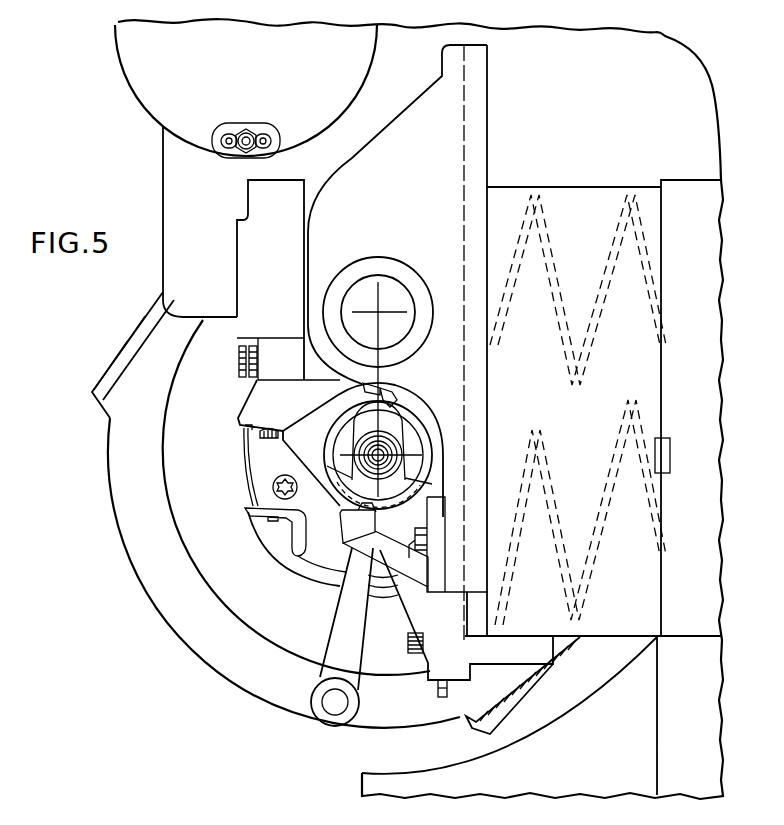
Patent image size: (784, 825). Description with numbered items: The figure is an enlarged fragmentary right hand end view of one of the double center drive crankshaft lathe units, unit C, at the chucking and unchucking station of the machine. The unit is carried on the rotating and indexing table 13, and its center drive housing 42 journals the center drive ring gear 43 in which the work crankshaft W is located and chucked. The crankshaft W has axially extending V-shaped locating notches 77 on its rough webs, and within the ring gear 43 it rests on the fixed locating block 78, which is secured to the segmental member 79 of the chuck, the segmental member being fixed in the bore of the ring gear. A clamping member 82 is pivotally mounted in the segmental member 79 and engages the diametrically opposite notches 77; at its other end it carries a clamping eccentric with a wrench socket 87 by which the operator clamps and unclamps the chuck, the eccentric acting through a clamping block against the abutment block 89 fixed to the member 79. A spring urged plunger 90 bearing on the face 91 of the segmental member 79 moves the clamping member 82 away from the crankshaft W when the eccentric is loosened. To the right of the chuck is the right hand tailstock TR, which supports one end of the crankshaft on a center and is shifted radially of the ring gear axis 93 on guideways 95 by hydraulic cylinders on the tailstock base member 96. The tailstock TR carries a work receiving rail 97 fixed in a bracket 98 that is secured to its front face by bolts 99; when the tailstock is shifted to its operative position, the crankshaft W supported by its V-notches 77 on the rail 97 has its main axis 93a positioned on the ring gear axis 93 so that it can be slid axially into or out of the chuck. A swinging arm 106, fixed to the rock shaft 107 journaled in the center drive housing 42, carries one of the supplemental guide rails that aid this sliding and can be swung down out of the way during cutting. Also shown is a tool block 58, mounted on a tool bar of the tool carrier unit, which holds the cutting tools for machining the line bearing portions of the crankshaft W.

The double center drive crankshaft lathe unit C is at (163, 182).
The right hand tailstock TR is at (397, 342).
The work crankshaft W is at (326, 438).
The rotating and indexing table 13 is at (509, 716).
The center drive housing 42 is at (117, 360).
The center drive ring gear 43 is at (188, 516).
The tool block 58 is at (480, 623).
The V-shaped locating notch 77 is at (377, 418).
The fixed locating block 78 is at (378, 382).
The segmental member 79 is at (257, 395).
The clamping member 82 is at (318, 545).
The wrench socket 87 is at (273, 484).
The abutment block 89 is at (262, 504).
The spring urged plunger 90 is at (273, 428).
The face of the segmental member 91 is at (243, 430).
The axis of rotation of the center drive ring gears 93 is at (378, 311).
The main axis of rotation of the workpiece 93a is at (378, 464).
The guideway 95 is at (478, 186).
The tailstock base member 96 is at (603, 620).
The work receiving rail 97 is at (375, 523).
The bracket 98 is at (387, 548).
The bolt 99 is at (409, 546).
The swinging arm 106 is at (337, 625).
The rock shaft 107 is at (335, 700).